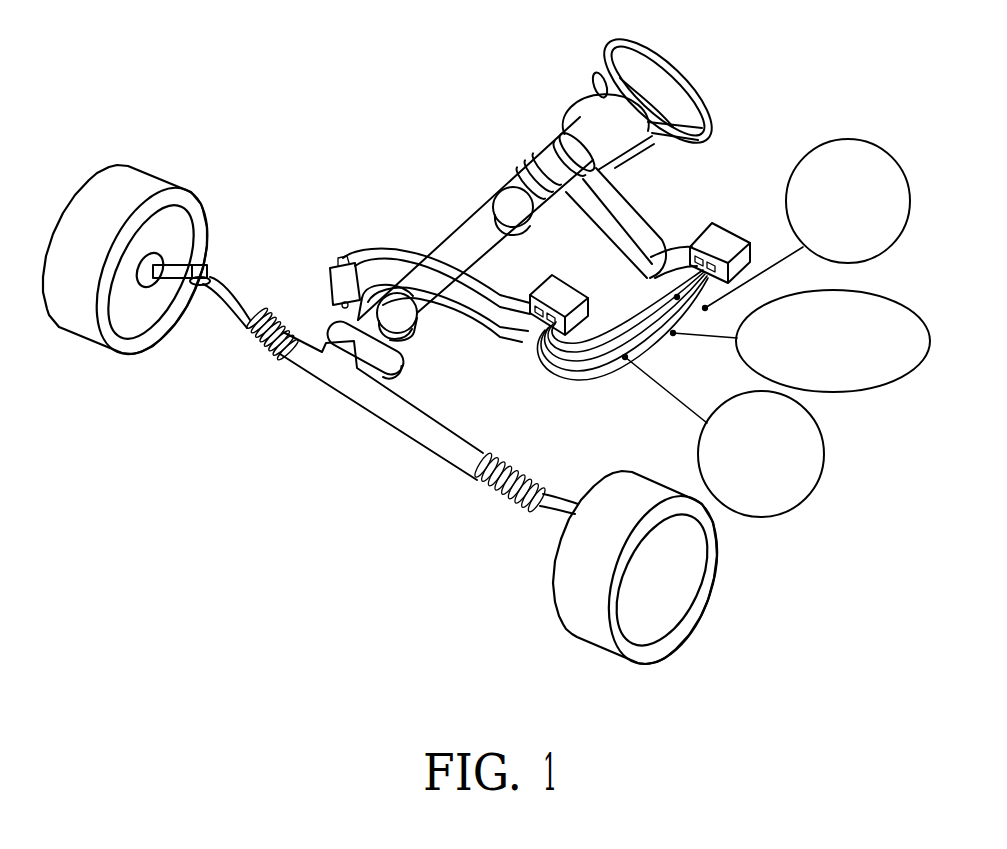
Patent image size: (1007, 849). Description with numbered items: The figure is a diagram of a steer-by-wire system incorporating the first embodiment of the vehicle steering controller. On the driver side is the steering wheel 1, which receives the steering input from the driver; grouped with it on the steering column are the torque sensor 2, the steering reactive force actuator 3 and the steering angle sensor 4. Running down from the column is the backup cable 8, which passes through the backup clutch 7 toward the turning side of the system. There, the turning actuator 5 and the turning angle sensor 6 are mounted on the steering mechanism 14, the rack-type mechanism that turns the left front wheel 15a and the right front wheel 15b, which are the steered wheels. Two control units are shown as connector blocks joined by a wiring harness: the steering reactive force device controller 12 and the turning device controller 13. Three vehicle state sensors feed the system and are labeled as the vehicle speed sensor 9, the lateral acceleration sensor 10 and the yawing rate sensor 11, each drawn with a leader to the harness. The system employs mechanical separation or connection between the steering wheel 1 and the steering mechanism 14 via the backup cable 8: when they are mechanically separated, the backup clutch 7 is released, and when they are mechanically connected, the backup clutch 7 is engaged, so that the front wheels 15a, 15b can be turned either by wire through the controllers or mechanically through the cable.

The steering wheel 1 is at (620, 45).
The torque sensor 2 is at (577, 112).
The steering reactive force actuator 3 is at (548, 140).
The steering angle sensor 4 is at (527, 157).
The turning actuator 5 is at (328, 277).
The turning angle sensor 6 is at (340, 307).
The backup clutch 7 is at (527, 161).
The backup cable 8 is at (457, 236).
The vehicle speed sensor 9 is at (864, 142).
The lateral acceleration sensor 10 is at (874, 295).
The yawing rate sensor 11 is at (823, 437).
The steering reactive force device controller 12 is at (731, 232).
The turning device controller 13 is at (546, 280).
The steering mechanism 14 is at (396, 424).
The left front wheel 15a is at (675, 487).
The right front wheel 15b is at (160, 178).